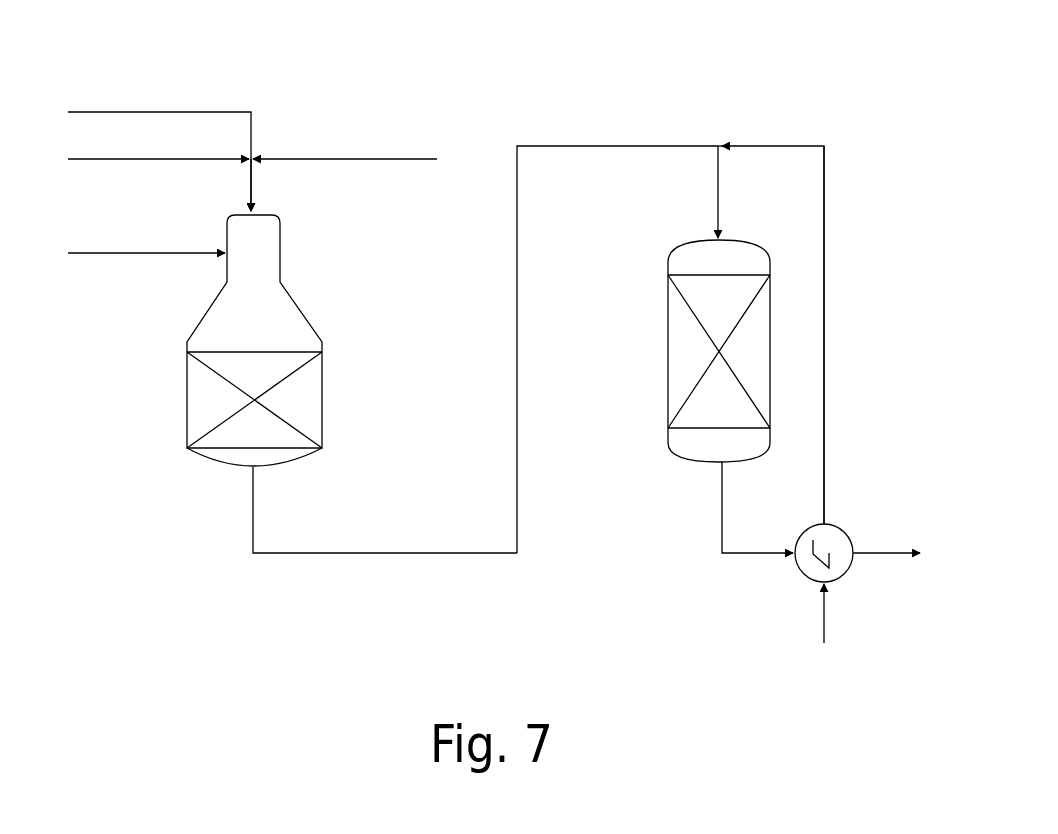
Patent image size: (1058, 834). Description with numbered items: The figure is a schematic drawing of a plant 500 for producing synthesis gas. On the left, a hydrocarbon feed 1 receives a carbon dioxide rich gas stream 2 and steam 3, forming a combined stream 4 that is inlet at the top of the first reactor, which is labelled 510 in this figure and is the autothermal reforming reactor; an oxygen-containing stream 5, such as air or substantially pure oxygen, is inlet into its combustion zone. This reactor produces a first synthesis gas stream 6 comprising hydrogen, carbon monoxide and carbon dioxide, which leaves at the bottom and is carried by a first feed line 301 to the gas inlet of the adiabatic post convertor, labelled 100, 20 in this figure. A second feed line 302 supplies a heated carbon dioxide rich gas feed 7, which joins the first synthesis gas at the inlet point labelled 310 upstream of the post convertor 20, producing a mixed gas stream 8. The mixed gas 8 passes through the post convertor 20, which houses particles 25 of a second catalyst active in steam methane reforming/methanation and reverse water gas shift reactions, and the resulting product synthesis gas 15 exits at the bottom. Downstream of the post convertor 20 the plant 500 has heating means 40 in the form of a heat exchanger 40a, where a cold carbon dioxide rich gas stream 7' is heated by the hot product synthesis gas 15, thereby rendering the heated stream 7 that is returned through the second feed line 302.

The hydrocarbon feed 1 is at (149, 152).
The CO2 rich gas stream 2 is at (147, 159).
The steam 3 is at (345, 138).
The combined stream 4 is at (266, 185).
The oxygen-containing stream 5 is at (135, 252).
The first synthesis gas stream 6 is at (385, 510).
The heated CO2 rich gas feed 7 is at (773, 335).
The mixed gas stream 8 is at (709, 192).
The product synthesis gas 15 is at (821, 526).
The particles of second catalyst 25 is at (763, 363).
The reactor 100 is at (659, 338).
The adiabatic post convertor 20 is at (656, 268).
The first feed line 301 is at (517, 348).
The second feed line 302 is at (825, 302).
The inlet 310 is at (726, 144).
The heating means 40 is at (873, 520).
The heat exchanger 40a is at (900, 490).
The CO2 rich gas stream 7' is at (813, 628).
The plant 500 is at (652, 576).
The pre-reactor 510 is at (314, 326).